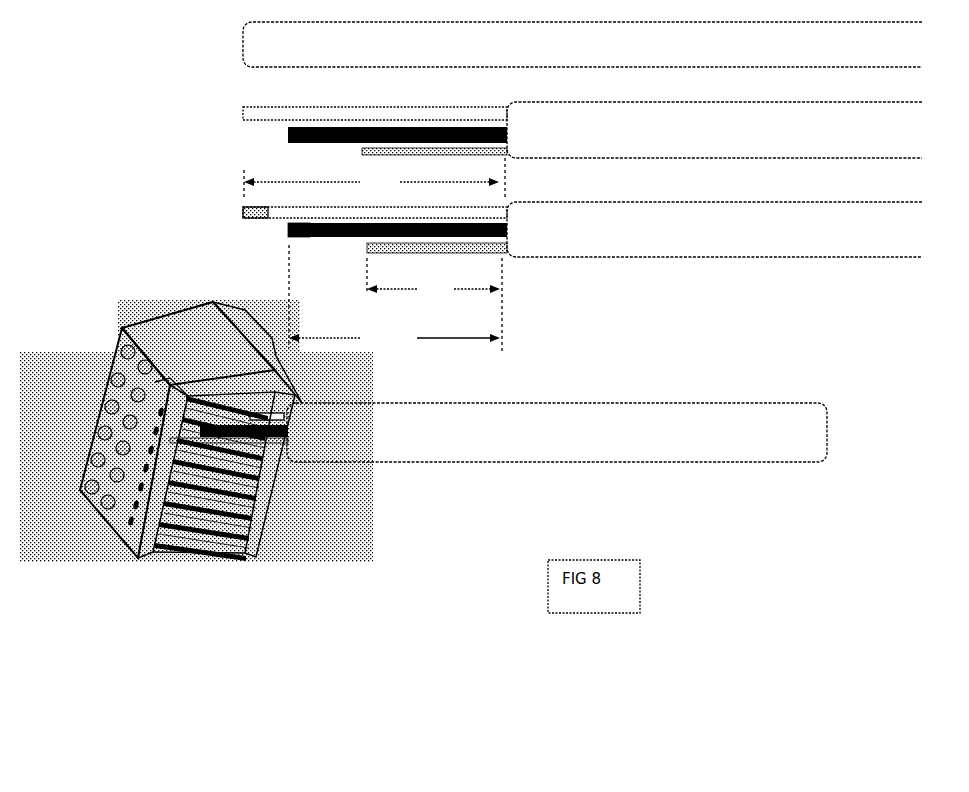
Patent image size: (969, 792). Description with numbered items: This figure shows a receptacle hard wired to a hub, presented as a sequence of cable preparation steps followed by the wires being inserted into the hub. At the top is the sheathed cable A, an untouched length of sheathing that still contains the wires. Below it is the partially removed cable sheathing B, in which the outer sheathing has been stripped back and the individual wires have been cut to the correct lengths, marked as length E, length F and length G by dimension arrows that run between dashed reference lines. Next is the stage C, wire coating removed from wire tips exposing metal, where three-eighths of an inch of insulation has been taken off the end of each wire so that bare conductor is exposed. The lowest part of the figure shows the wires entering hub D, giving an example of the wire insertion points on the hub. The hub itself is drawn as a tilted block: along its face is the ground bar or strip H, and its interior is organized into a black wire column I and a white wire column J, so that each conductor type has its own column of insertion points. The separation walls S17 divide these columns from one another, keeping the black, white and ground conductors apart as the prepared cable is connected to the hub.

The sheathed cable A is at (471, 44).
The partially removed cable sheathing B is at (471, 130).
The wire coating removed from wire tips C is at (471, 229).
The wires entering hub D is at (424, 440).
The wire length E is at (374, 179).
The wire length F is at (434, 305).
The wire length G is at (394, 302).
The ground bar or strip H is at (120, 539).
The black wire column I is at (153, 553).
The white wire column J is at (233, 533).
The separation walls S17 is at (202, 545).